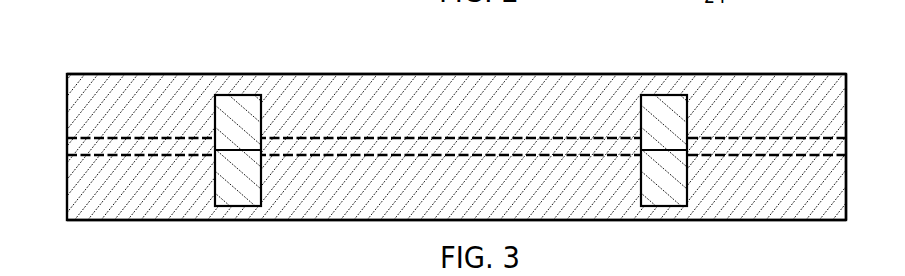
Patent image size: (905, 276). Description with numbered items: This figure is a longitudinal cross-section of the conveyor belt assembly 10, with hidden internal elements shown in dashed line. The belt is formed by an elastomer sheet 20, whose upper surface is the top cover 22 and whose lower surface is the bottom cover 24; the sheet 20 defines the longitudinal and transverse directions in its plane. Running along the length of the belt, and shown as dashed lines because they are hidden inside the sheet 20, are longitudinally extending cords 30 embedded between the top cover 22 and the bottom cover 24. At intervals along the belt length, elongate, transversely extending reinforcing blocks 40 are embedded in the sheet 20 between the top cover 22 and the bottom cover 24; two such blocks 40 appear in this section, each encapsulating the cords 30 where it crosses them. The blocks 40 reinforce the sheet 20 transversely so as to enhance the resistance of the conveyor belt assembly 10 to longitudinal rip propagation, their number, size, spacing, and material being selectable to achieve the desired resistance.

The conveyor belt assembly 10 is at (67, 37).
The elastomer sheet 20 is at (137, 74).
The top cover 22 is at (810, 74).
The bottom cover 24 is at (805, 220).
The cords 30 is at (387, 138).
The reinforcing blocks 40 is at (238, 95).